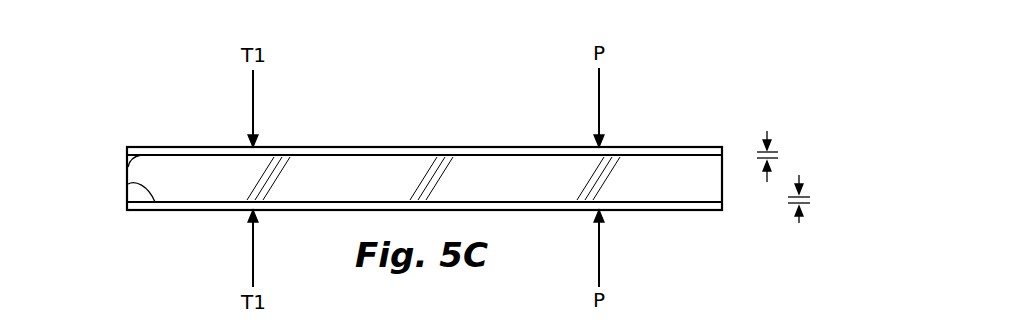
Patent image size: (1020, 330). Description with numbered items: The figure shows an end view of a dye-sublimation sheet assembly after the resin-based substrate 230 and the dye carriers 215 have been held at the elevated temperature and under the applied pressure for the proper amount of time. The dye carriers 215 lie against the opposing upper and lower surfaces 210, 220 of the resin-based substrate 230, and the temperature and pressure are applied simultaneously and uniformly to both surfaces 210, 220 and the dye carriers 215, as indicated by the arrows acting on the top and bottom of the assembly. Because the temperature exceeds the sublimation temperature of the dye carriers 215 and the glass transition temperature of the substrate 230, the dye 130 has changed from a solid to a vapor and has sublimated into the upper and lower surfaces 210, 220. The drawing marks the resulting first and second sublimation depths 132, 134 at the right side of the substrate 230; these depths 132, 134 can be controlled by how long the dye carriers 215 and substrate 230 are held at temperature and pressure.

The upper surface 210 is at (127, 168).
The lower surface 220 is at (127, 188).
The resin-based substrate 230 is at (200, 172).
The dye 130 is at (413, 146).
The dye carrier 215 is at (642, 148).
The first sublimation depth 132 is at (767, 144).
The second sublimation depth 134 is at (799, 212).